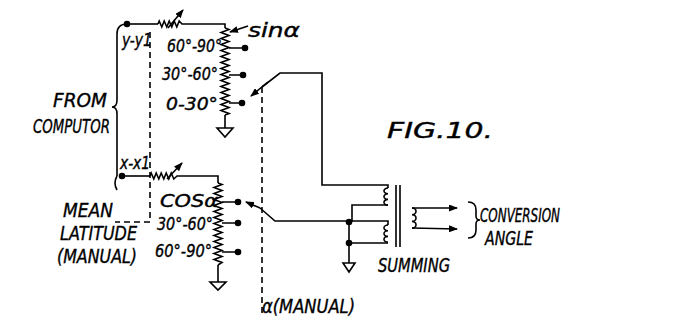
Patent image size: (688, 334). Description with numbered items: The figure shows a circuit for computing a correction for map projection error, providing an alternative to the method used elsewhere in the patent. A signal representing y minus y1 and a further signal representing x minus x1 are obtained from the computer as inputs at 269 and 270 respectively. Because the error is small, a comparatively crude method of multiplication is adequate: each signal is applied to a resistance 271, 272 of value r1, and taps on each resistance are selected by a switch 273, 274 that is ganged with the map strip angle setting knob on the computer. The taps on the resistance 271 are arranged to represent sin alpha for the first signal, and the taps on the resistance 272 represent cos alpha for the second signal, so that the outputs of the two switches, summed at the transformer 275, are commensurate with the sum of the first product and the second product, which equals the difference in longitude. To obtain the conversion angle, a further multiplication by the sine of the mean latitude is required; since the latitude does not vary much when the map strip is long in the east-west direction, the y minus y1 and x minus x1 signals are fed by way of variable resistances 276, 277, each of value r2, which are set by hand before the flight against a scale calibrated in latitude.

The input 269 is at (125, 27).
The variable resistance 276 is at (158, 25).
The resistance 271 is at (229, 60).
The switch 273 is at (265, 83).
The input 270 is at (111, 185).
The variable resistance 277 is at (176, 171).
The resistance 272 is at (222, 228).
The switch 274 is at (260, 208).
The transformer 275 is at (415, 235).